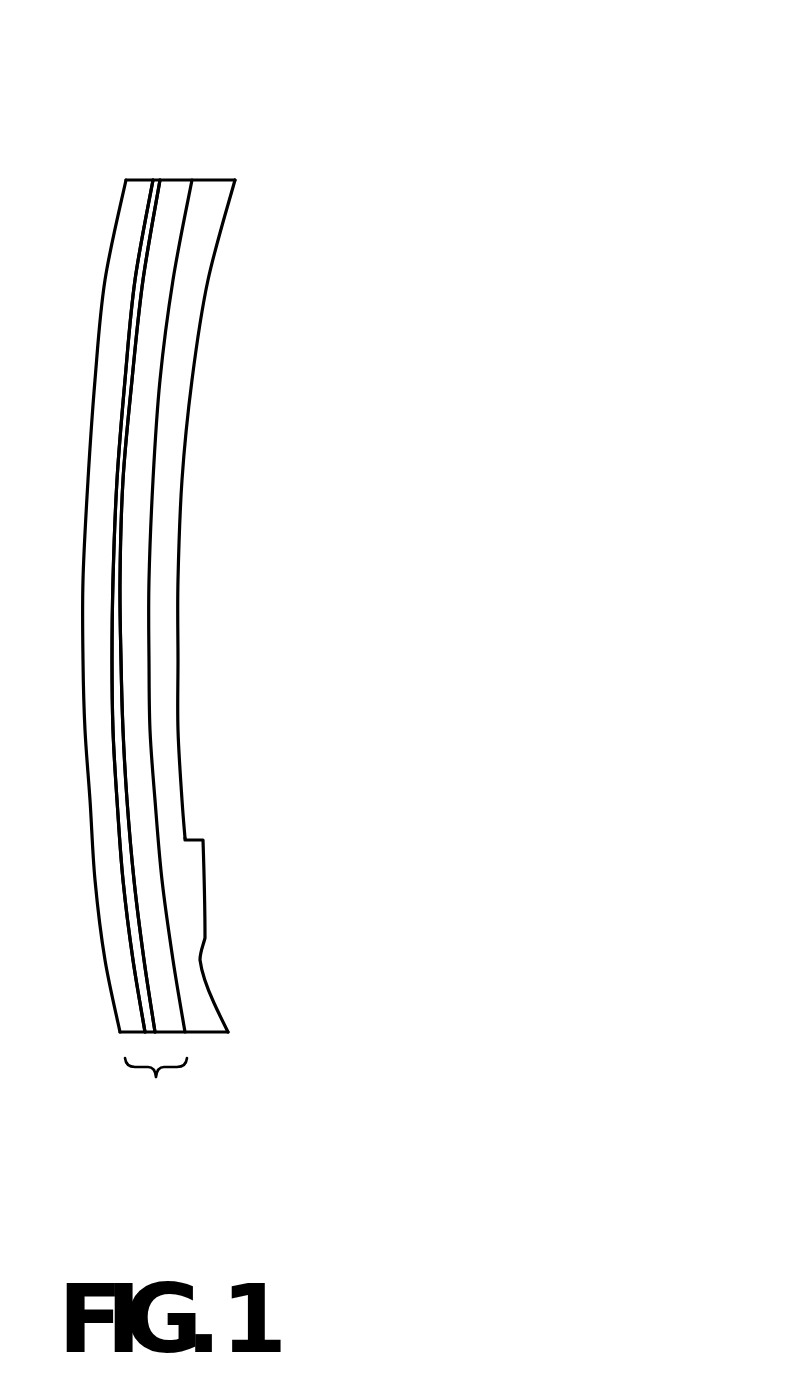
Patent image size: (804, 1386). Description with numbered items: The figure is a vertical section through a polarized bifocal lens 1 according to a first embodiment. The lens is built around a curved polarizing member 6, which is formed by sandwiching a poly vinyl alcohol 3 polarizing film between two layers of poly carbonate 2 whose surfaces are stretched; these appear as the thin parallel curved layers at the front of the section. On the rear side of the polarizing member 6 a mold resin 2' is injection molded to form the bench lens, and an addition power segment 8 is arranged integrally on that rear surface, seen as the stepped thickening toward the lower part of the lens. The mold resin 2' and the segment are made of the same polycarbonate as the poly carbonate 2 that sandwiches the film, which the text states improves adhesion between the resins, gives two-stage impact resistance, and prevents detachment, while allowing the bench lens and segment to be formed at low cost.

The bifocal lens 1 is at (313, 338).
The poly carbonate 2 is at (165, 516).
The mold resin 2' is at (245, 459).
The poly vinyl alcohol 3 is at (158, 186).
The polarizing member 6 is at (156, 1100).
The addition power segment 8 is at (213, 892).